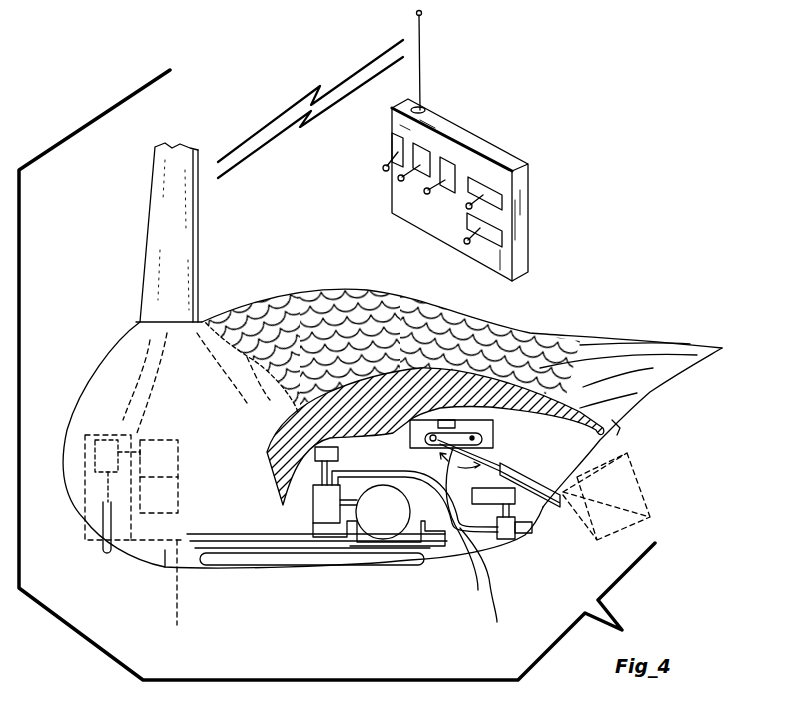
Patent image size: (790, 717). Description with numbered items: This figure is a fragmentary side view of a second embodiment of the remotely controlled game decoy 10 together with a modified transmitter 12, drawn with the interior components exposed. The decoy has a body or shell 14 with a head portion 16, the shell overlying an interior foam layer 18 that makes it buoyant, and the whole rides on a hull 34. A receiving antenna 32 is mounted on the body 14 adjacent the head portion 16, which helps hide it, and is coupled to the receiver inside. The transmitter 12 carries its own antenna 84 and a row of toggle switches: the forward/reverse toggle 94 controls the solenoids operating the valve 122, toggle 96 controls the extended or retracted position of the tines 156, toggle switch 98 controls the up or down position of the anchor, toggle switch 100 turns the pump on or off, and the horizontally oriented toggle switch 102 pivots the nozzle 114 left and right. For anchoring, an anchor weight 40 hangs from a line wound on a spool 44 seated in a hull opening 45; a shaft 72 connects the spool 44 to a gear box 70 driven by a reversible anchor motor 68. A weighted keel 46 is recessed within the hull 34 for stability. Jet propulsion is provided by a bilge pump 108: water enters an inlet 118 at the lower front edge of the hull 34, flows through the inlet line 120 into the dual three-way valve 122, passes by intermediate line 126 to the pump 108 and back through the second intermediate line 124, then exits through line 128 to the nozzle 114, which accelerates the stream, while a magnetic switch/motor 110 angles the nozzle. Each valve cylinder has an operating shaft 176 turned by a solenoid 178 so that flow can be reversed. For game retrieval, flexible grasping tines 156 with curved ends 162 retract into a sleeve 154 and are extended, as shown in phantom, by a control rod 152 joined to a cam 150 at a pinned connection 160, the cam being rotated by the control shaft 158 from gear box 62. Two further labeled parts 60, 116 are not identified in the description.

The game decoy 10 is at (125, 290).
The transmitter 12 is at (498, 118).
The body 14 is at (218, 379).
The head portion 16 is at (200, 160).
The interior foam layer 18 is at (440, 428).
The receiving antenna 32 is at (200, 245).
The hull 34 is at (165, 553).
The anchor weight 40 is at (100, 545).
The anchor spool 44 is at (110, 420).
The hull opening 45 is at (83, 450).
The weighted keel 46 is at (232, 560).
The pivot 60 is at (470, 436).
The gear box 62 is at (637, 393).
The anchor motor 68 is at (173, 502).
The gear box 70 is at (173, 442).
The shaft 72 is at (123, 437).
The antenna 84 is at (423, 52).
The forward/reverse toggle switch 94 is at (385, 165).
The toggle switch 96 is at (400, 180).
The toggle switch 98 is at (430, 192).
The toggle switch 100 is at (472, 196).
The horizontally oriented toggle switch 102 is at (475, 243).
The pump 108 is at (381, 527).
The magnetic switch/motor 110 is at (516, 497).
The nozzle 114 is at (507, 539).
The connector 116 is at (525, 533).
The inlet 118 is at (125, 550).
The inlet line 120 is at (177, 608).
The dual three-way valve 122 is at (313, 503).
The second intermediate line 124 is at (464, 558).
The intermediate line 126 is at (345, 480).
The line 128 is at (497, 622).
The cam 150 is at (493, 425).
The control rod 152 is at (478, 590).
The sleeve 154 is at (620, 428).
The grasping tines 156 is at (620, 466).
The control shaft 158 is at (545, 365).
The pinned connection 160 is at (430, 436).
The curved ends 162 is at (660, 527).
The operating shaft 176 is at (313, 488).
The solenoid 178 is at (313, 452).